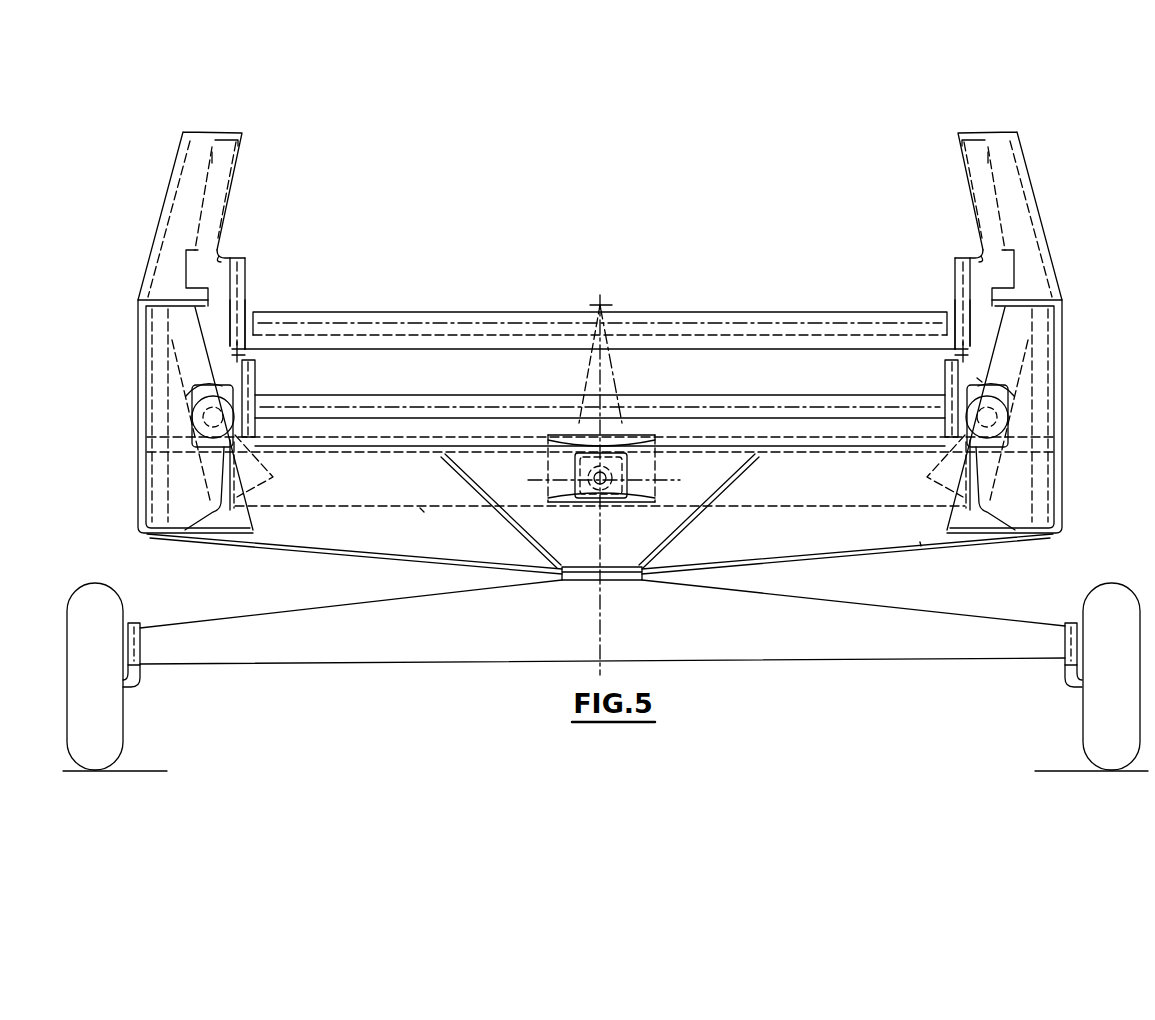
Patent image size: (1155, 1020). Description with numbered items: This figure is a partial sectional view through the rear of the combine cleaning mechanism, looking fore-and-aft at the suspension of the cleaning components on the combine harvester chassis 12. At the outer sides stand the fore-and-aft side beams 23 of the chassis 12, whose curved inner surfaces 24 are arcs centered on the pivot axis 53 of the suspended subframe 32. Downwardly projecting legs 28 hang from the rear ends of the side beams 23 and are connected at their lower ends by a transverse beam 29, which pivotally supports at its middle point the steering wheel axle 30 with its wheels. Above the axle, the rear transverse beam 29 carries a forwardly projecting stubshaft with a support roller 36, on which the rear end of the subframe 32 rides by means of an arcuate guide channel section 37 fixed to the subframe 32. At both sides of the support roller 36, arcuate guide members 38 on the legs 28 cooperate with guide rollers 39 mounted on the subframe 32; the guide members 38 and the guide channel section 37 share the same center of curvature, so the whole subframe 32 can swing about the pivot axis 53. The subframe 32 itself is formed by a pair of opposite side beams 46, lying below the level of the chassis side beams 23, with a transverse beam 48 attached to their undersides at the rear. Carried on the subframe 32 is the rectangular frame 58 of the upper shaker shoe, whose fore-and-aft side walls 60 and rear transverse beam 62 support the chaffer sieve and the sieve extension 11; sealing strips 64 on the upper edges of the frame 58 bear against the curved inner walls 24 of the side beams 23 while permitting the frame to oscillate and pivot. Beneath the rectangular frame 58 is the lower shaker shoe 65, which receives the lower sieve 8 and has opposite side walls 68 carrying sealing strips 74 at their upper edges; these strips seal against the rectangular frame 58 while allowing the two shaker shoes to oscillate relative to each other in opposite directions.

The lower sieve 8 is at (385, 395).
The sieve extension 11 is at (434, 312).
The combine harvester chassis 12 is at (921, 543).
The side beams 23 is at (174, 174).
The curved inner surfaces 24 is at (229, 194).
The downwardly projecting legs 28 is at (139, 415).
The transverse beam 29 is at (838, 548).
The steering wheel axle 30 is at (878, 660).
The subframe 32 is at (420, 511).
The support roller 36 is at (608, 499).
The guide channel section 37 is at (633, 505).
The arcuate guide members 38 is at (177, 348).
The guide rollers 39 is at (238, 412).
The side beams 46 is at (194, 389).
The transverse beam 48 is at (348, 507).
The pivot axis 53 is at (603, 304).
The rectangular frame 58 is at (247, 278).
The side walls 60 is at (247, 301).
The rear transverse beam 62 is at (749, 349).
The sealing strips 64 is at (221, 245).
The lower shaker shoe 65 is at (978, 379).
The side walls 68 is at (240, 389).
The sealing strips 74 is at (236, 353).